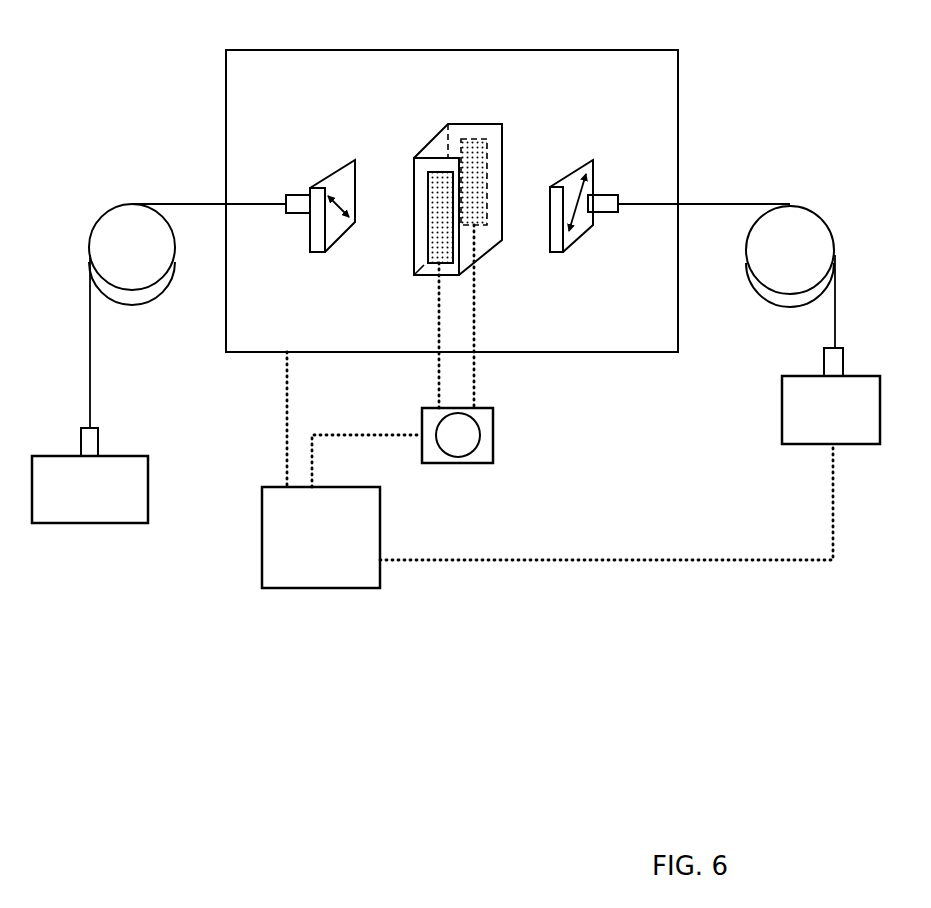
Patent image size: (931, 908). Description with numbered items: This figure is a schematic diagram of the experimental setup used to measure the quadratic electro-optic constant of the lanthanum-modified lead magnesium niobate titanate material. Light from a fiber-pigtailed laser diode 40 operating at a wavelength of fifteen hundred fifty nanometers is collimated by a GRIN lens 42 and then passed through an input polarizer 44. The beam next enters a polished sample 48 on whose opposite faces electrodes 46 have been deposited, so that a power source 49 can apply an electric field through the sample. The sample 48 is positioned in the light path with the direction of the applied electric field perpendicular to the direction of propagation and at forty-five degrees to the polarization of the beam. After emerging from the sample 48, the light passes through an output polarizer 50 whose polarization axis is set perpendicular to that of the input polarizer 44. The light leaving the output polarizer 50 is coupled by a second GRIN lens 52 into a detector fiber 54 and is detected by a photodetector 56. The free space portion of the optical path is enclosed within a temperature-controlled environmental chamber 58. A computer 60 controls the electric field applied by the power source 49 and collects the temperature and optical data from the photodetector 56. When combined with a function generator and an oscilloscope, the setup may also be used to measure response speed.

The laser diode 40 is at (110, 523).
The GRIN lens 42 is at (292, 197).
The input polarizer 44 is at (338, 160).
The electrodes 46 is at (428, 229).
The polished sample 48 is at (445, 124).
The power source 49 is at (493, 453).
The output polarizer 50 is at (578, 160).
The GRIN lens 52 is at (609, 195).
The detector fiber 54 is at (757, 204).
The photodetector 56 is at (800, 444).
The temperature-controlled environmental chamber 58 is at (242, 50).
The computer 60 is at (320, 588).